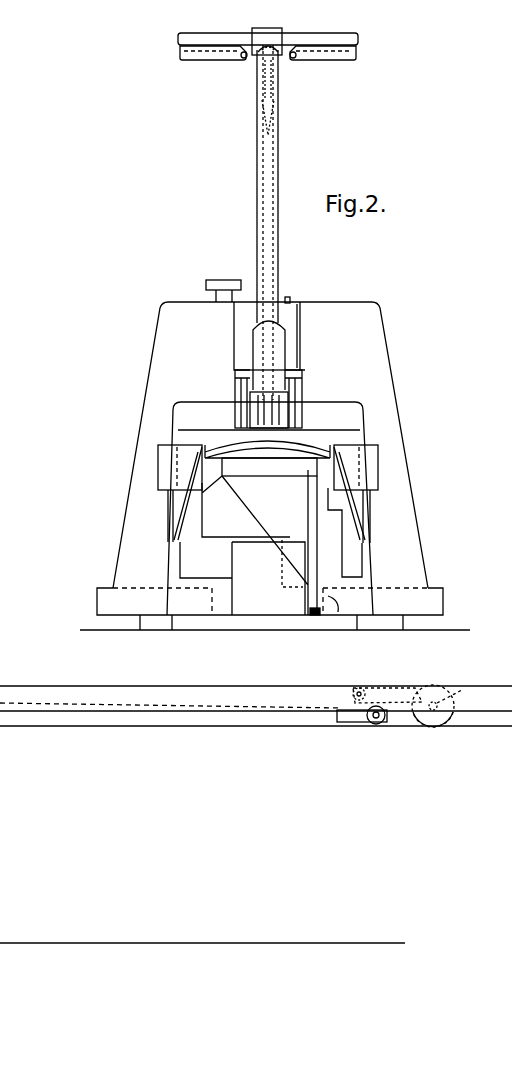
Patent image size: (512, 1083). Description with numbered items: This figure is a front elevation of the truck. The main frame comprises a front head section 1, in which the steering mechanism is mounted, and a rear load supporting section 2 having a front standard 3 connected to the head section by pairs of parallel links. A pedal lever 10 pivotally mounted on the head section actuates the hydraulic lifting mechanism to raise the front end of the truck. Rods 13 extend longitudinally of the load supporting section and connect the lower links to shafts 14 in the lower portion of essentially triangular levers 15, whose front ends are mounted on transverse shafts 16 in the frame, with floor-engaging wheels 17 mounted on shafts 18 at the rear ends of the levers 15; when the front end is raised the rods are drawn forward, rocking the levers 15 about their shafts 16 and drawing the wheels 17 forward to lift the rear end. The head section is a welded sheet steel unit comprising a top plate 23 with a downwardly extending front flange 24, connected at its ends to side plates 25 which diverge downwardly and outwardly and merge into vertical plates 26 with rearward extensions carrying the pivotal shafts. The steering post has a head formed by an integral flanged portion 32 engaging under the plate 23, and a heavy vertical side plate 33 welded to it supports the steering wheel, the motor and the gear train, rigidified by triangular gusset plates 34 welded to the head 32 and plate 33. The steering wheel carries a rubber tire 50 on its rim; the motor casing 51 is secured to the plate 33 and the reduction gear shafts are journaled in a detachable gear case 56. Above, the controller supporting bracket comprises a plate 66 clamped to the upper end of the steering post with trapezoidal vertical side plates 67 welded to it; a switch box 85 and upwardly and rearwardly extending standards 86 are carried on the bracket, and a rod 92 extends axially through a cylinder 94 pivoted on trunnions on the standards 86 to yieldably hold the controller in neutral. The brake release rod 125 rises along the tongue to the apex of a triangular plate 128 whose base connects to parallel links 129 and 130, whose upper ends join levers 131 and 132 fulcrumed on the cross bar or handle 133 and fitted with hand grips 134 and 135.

The front head section 1 is at (358, 433).
The rear load supporting section 2 is at (433, 592).
The front standard 3 is at (380, 345).
The pedal lever 10 is at (332, 456).
The rods 13 is at (314, 716).
The shafts 14 is at (375, 724).
The triangular levers 15 is at (391, 690).
The transverse shafts 16 is at (361, 689).
The floor-engaging wheels 17 is at (441, 700).
The shafts 18 is at (463, 690).
The top plate 23 is at (312, 432).
The front flange 24 is at (296, 456).
The side plates 25 is at (184, 490).
The vertical plates 26 is at (366, 555).
The flanged portion 32 is at (292, 472).
The vertical side plate 33 is at (318, 616).
The gusset plates 34 is at (257, 508).
The tire 50 is at (254, 618).
The motor casing 51 is at (232, 537).
The gear case 56 is at (340, 612).
The plate 66 is at (304, 418).
The vertical side plates 67 is at (238, 396).
The switch box 85 is at (244, 322).
The standards 86 is at (300, 335).
The rod 92 is at (289, 297).
The cylinder 94 is at (298, 313).
The rod 125 is at (265, 180).
The triangular plate 128 is at (272, 127).
The link 129 is at (262, 100).
The link 130 is at (275, 100).
The lever 131 is at (248, 57).
The lever 132 is at (287, 58).
The cross bar or handle 133 is at (203, 36).
The hand grip 134 is at (208, 58).
The hand grip 135 is at (330, 58).